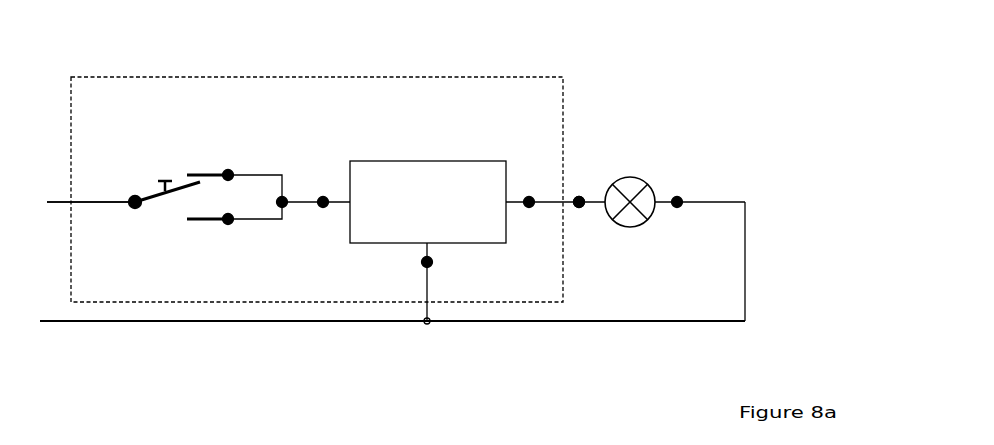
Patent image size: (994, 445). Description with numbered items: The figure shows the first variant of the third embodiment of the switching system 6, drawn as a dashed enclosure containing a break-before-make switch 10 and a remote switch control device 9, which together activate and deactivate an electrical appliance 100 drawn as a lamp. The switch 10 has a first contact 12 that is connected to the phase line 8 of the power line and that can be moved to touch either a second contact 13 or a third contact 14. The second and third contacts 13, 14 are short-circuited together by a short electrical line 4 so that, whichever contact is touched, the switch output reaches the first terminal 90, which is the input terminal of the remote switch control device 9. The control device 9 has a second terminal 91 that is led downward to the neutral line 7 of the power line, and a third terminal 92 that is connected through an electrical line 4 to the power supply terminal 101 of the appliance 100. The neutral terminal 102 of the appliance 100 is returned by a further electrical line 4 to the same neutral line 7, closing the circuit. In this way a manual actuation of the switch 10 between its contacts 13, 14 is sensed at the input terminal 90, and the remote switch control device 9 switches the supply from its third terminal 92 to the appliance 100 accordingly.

The electrical line 4 is at (278, 162).
The switching system 6 is at (558, 72).
The neutral line 7 is at (59, 308).
The phase line 8 is at (59, 182).
The remote switch control device 9 is at (484, 157).
The break-before-make switch 10 is at (203, 157).
The first contact 12 is at (132, 185).
The second contact 13 is at (238, 160).
The third contact 14 is at (232, 232).
The first terminal 90 is at (336, 193).
The second terminal 91 is at (440, 254).
The third terminal 92 is at (533, 187).
The electrical appliance 100 is at (654, 157).
The power supply terminal 101 is at (588, 215).
The neutral terminal 102 is at (684, 217).